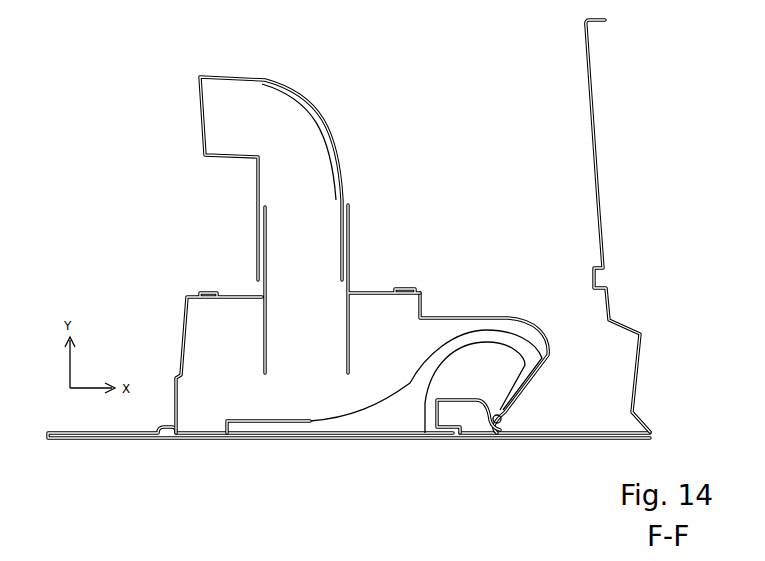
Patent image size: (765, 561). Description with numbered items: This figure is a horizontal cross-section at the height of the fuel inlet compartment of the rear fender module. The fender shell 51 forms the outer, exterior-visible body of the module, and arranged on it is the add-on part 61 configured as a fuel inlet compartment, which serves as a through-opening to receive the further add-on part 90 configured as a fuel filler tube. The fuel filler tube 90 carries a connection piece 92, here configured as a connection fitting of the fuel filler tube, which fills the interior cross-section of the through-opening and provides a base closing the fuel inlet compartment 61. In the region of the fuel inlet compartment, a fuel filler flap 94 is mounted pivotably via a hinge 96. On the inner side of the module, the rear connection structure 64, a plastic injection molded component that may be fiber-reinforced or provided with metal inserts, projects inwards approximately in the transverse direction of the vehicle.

The fender shell 51 is at (63, 432).
The add-on part configured as fuel inlet compartment 61 is at (185, 325).
The rear connection structure 64 is at (600, 200).
The fuel filler tube 90 is at (240, 95).
The connection piece 92 is at (380, 293).
The fuel filler flap 94 is at (283, 437).
The hinge 96 is at (505, 408).